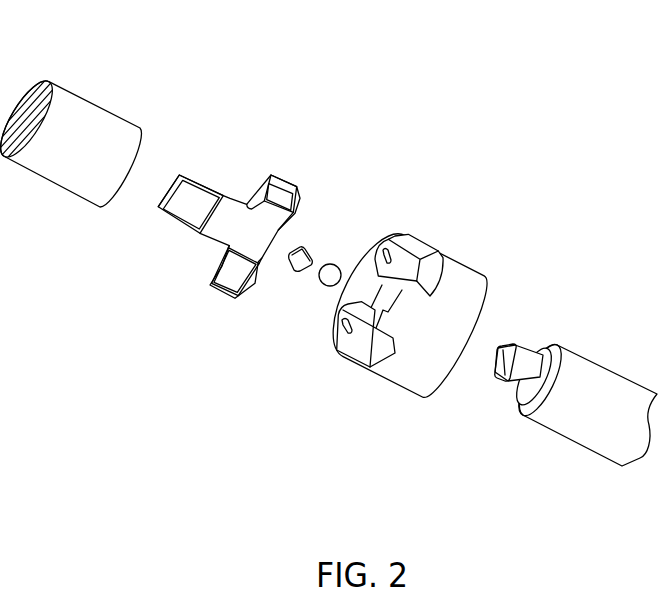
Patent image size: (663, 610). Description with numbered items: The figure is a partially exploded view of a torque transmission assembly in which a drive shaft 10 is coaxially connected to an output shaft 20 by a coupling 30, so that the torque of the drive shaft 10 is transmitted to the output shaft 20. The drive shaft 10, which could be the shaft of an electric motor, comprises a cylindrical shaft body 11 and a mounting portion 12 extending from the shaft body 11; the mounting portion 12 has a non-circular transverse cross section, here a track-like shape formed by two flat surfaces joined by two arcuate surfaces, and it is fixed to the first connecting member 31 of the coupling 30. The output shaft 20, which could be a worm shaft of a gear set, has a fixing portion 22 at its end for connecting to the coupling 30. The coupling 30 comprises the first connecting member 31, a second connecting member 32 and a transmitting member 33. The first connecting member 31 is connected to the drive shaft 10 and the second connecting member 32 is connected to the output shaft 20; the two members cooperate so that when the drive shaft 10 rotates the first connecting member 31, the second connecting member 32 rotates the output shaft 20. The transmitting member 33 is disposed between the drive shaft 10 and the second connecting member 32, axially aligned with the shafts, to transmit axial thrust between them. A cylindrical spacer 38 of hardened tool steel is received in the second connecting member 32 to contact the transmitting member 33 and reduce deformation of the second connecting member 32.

The drive shaft 10 is at (565, 375).
The shaft body 11 is at (587, 407).
The mounting portion 12 is at (512, 363).
The output shaft 20 is at (97, 135).
The fixing portion 22 is at (67, 170).
The coupling 30 is at (312, 319).
The first connecting member 31 is at (410, 339).
The second connecting member 32 is at (227, 232).
The transmitting member 33 is at (332, 276).
The spacer 38 is at (305, 250).